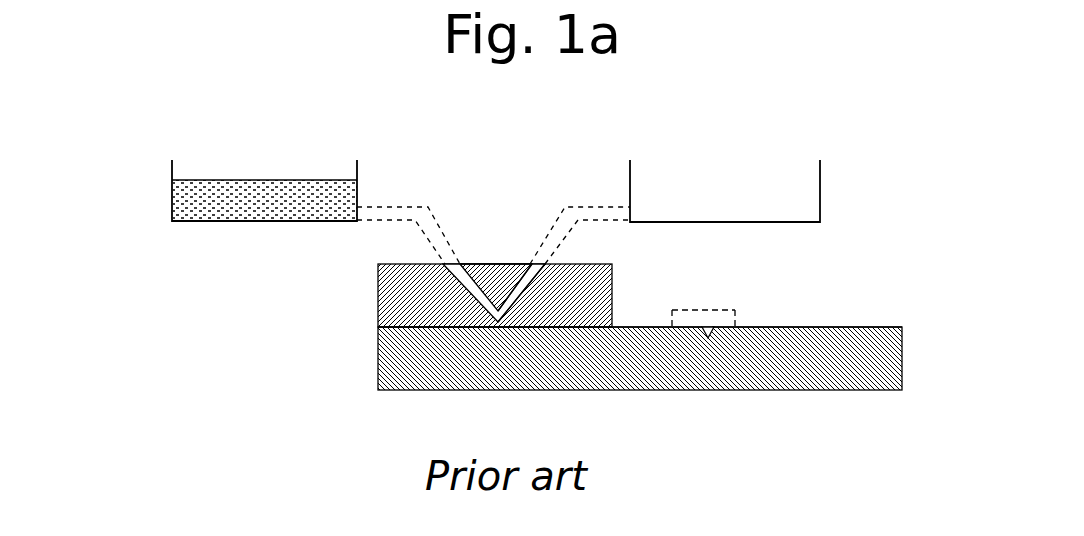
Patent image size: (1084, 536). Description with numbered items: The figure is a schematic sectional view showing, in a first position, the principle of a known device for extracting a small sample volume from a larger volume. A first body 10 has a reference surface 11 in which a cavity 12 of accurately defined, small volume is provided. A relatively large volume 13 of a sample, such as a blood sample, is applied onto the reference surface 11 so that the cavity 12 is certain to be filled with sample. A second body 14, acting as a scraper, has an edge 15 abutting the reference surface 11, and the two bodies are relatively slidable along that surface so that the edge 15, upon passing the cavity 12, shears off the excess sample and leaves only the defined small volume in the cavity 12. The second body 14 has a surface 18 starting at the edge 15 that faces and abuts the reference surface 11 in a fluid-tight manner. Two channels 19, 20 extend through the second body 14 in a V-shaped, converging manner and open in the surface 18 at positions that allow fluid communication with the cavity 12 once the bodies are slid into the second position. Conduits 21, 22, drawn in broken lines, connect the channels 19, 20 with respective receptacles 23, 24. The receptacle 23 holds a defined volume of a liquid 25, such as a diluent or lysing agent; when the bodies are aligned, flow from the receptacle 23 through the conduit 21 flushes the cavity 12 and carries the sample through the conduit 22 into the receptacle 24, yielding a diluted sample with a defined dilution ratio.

The first body 10 is at (378, 355).
The reference surface 11 is at (850, 328).
The cavity 12 is at (708, 340).
The large volume of sample 13 is at (735, 310).
The second body 14 is at (378, 302).
The edge 15 is at (613, 328).
The surface 18 is at (428, 327).
The channel 19 is at (466, 272).
The channel 20 is at (540, 268).
The conduit 21 is at (437, 222).
The conduit 22 is at (565, 207).
The receptacle 23 is at (172, 195).
The receptacle 24 is at (822, 173).
The liquid 25 is at (253, 188).